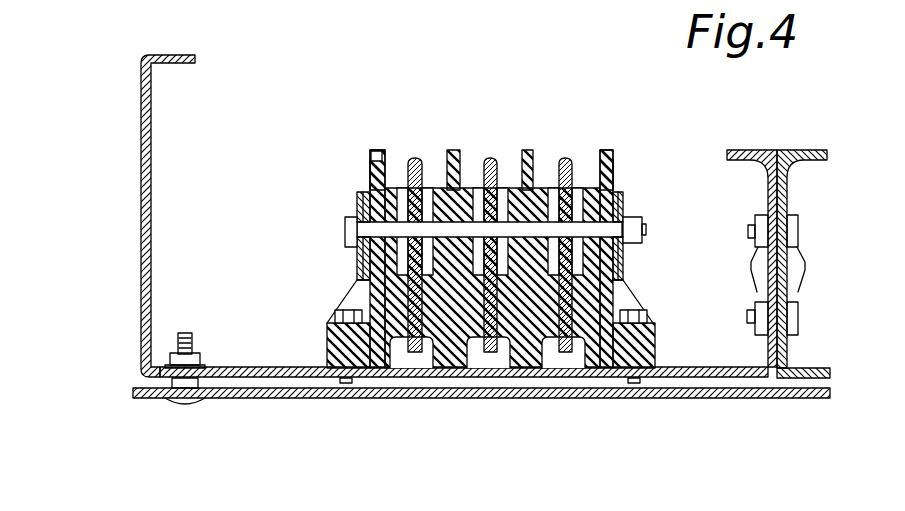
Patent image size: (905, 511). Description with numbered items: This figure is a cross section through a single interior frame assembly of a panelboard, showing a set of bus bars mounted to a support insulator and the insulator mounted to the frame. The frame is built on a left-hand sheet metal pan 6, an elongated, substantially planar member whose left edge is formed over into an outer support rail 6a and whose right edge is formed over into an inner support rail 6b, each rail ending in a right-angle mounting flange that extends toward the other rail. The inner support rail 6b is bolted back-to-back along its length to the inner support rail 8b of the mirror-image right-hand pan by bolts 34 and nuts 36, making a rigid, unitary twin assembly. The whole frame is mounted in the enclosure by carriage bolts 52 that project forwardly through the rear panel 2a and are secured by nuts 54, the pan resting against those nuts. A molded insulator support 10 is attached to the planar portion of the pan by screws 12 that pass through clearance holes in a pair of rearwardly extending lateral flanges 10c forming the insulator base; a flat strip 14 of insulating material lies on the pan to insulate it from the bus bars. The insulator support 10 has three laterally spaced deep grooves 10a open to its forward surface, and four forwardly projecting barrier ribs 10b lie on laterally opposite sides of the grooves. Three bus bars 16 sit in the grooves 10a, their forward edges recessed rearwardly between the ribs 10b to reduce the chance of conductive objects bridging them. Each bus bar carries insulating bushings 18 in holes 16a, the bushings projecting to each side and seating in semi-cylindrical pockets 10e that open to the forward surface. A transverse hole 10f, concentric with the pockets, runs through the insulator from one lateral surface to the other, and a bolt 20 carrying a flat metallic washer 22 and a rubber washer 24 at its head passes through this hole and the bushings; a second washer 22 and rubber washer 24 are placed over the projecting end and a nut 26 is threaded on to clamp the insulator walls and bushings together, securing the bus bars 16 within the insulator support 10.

The rear panel 2a is at (352, 399).
The left-hand sheet metal pan 6 is at (293, 378).
The outer support rail 6a is at (152, 129).
The inner support rail 6b is at (768, 183).
The inner support rail 8b is at (788, 185).
The flat strip of insulating material 14 is at (690, 368).
The nuts 36 is at (757, 275).
The bolts 34 is at (806, 266).
The carriage bolts 52 is at (185, 333).
The nuts 54 is at (202, 393).
The insulator support 10 is at (358, 162).
The barrier ribs 10b is at (375, 150).
The insulating bushings 18 is at (402, 185).
The holes 16a is at (428, 185).
The deep grooves 10a is at (417, 346).
The bus bars 16 is at (415, 158).
The pockets 10e is at (371, 182).
The flat metallic washer 22 is at (357, 205).
The bolts 20 is at (345, 228).
The nut 26 is at (642, 225).
The transverse hole 10f is at (360, 239).
The rubber washer 24 is at (358, 266).
The lateral flanges 10c is at (325, 347).
The screws 12 is at (342, 312).